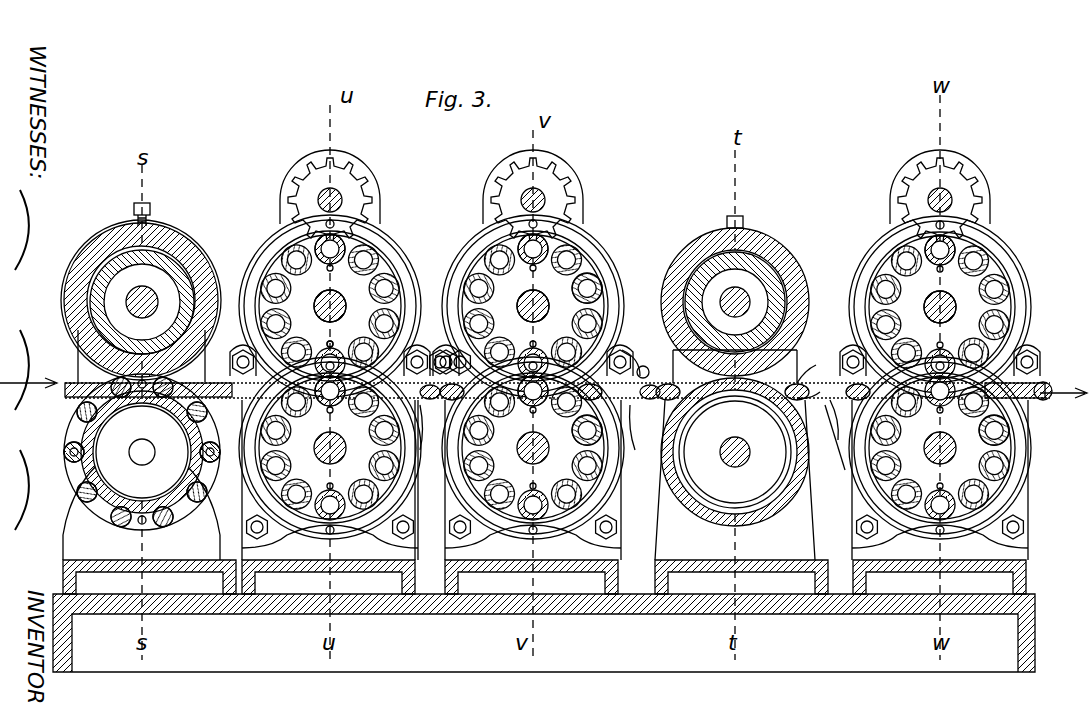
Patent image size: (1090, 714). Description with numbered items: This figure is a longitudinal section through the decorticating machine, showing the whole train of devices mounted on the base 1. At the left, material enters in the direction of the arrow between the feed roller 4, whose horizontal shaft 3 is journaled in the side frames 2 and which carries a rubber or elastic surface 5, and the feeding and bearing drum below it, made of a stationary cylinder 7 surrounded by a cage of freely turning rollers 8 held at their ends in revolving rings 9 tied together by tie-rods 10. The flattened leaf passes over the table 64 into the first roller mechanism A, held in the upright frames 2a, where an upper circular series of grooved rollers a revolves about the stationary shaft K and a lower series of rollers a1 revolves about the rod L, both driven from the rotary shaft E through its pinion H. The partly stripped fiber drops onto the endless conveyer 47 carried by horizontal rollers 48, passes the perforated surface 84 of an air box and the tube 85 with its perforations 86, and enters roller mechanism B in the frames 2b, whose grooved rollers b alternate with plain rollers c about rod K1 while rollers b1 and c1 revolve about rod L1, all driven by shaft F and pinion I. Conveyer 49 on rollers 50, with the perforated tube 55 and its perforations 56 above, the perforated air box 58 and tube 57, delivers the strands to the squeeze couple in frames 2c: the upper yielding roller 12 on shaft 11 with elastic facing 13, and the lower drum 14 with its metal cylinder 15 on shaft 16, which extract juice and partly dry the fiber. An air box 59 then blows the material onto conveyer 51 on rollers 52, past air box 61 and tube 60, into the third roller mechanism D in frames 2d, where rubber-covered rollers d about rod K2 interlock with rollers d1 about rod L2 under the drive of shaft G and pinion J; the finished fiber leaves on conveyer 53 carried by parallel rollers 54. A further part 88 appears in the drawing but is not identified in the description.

The base 1 is at (1036, 608).
The side frames 2 is at (65, 545).
The parallel upright frames 2a is at (248, 532).
The parallel uprights 2b is at (536, 469).
The parallel upright frames 2c is at (741, 497).
The upright frames 2d is at (1030, 528).
The horizontal shaft 3 is at (126, 302).
The feed roller 4 is at (75, 252).
The elastic surface 5 is at (125, 240).
The stationary cylinder 7 is at (85, 418).
The rollers 8 is at (88, 400).
The rings 9 is at (105, 388).
The tie-rods 10 is at (70, 452).
The shaft 11 is at (785, 290).
The squeezing roller 12 is at (775, 272).
The elastic facing 13 is at (748, 232).
The drum 14 is at (690, 500).
The metal cylinder 15 is at (715, 510).
The shaft 16 is at (752, 452).
The endless conveyer 47 is at (430, 400).
The horizontal rollers 48 is at (415, 465).
The endless conveyer 49 is at (650, 398).
The rollers 50 is at (642, 427).
The endless conveyer 51 is at (845, 420).
The rollers 52 is at (836, 437).
The endless conveyer 53 is at (1040, 398).
The parallel rollers 54 is at (1047, 383).
The tube 55 is at (646, 365).
The perforations 56 is at (632, 353).
The perforated tube 57 is at (745, 308).
The perforated air box 58 is at (700, 400).
The air box 59 is at (805, 368).
The tube 60 is at (800, 345).
The air box 61 is at (817, 375).
The table 64 is at (212, 380).
The perforated surface 84 is at (445, 305).
The tube 85 is at (448, 352).
The perforations 86 is at (352, 356).
The arm 88 is at (430, 430).
The roller mechanism A is at (232, 242).
The roller mechanism B is at (533, 306).
The roller mechanism D is at (1025, 300).
The rotary shaft E is at (345, 200).
The shaft F is at (548, 200).
The shaft G is at (955, 200).
The pinion H is at (345, 170).
The pinion I is at (550, 165).
The pinion J is at (955, 170).
The stationary horizontal shaft K is at (341, 306).
The stationary horizontal rod K1 is at (544, 311).
The stationary horizontal rod K2 is at (947, 312).
The rod L is at (330, 448).
The rod L1 is at (533, 448).
The rod L2 is at (940, 448).
The rollers a is at (322, 283).
The rollers a1 is at (320, 426).
The rollers b is at (543, 291).
The rollers b1 is at (553, 382).
The rollers c is at (522, 282).
The rollers c1 is at (516, 464).
The rollers d is at (930, 283).
The rollers d1 is at (1030, 470).